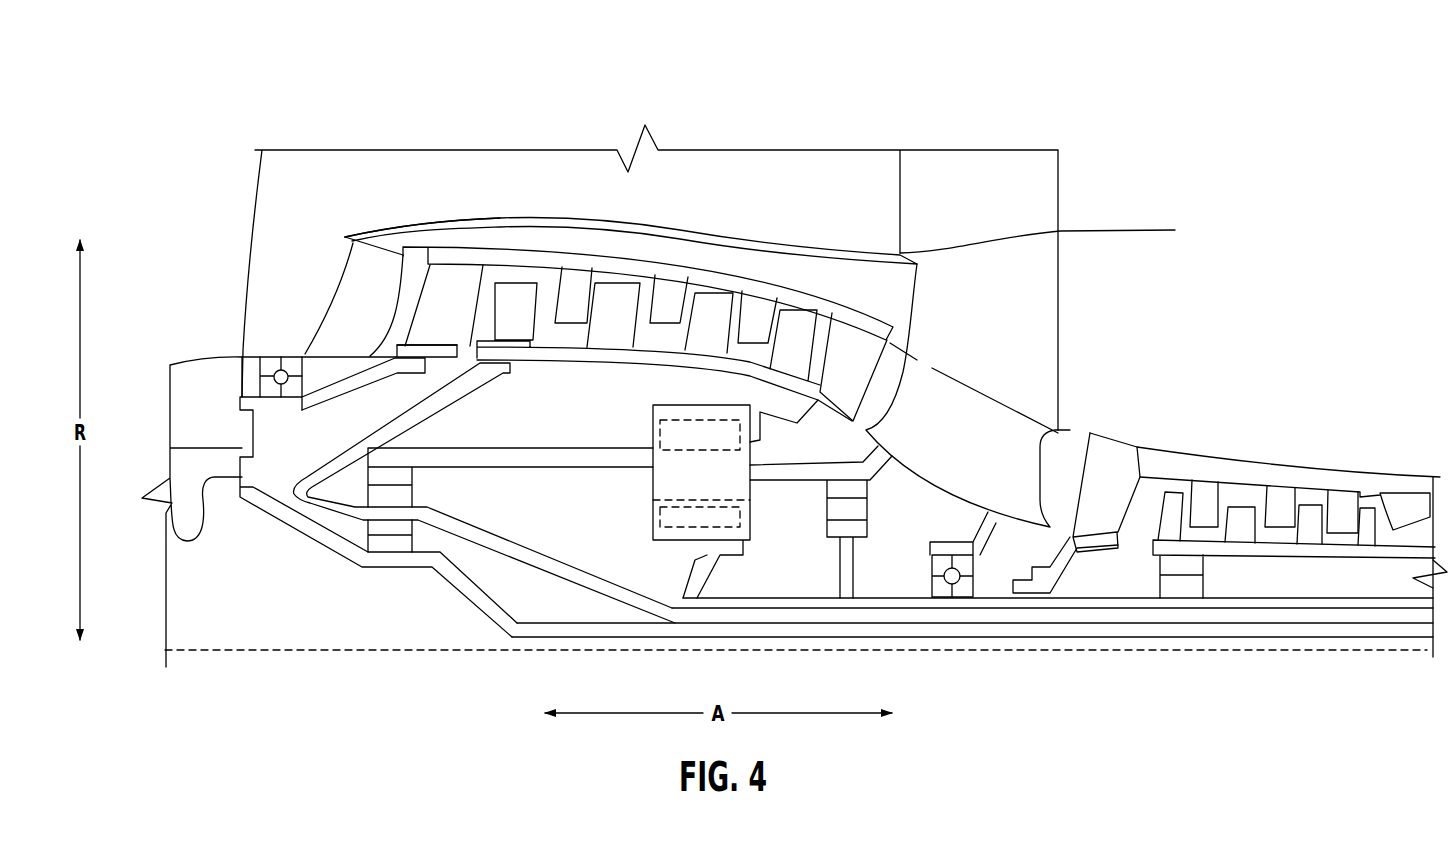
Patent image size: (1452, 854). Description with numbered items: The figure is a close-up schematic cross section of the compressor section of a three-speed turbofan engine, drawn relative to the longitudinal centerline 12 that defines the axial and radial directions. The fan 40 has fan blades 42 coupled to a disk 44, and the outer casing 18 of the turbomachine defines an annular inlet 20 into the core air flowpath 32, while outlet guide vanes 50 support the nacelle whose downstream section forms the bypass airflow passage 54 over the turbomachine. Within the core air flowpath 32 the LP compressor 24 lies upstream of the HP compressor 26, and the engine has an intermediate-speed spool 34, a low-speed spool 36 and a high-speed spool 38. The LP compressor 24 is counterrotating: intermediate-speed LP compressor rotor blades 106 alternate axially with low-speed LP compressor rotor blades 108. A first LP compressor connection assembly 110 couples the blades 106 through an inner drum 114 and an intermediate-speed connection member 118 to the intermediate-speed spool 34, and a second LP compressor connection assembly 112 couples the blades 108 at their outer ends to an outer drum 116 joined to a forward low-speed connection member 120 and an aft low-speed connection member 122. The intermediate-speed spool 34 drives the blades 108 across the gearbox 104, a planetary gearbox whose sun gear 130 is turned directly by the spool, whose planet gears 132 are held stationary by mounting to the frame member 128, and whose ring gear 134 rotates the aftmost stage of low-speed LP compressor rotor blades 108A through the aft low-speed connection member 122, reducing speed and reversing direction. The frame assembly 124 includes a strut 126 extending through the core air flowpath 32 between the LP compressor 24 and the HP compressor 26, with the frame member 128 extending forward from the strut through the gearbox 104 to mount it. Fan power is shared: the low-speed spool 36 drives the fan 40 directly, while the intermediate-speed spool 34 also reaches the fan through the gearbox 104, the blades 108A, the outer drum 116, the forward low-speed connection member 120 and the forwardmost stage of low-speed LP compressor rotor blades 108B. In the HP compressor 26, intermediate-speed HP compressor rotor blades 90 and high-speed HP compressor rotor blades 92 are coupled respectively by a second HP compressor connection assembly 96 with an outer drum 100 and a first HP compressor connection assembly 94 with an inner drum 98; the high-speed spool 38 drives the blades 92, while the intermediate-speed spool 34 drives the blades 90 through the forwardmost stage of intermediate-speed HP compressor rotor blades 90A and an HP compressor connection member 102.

The longitudinal centerline 12 is at (1232, 660).
The outer casing 18 is at (1127, 230).
The annular inlet 20 is at (315, 248).
The low pressure (LP) compressor 24 is at (527, 213).
The high pressure (HP) compressor 26 is at (1275, 430).
The core air flowpath 32 is at (1063, 407).
The intermediate-speed spool 34 is at (1090, 602).
The low-speed spool 36 is at (968, 632).
The high-speed spool 38 is at (1410, 553).
The fan 40 is at (135, 195).
The fan blades 42 is at (189, 237).
The disk 44 is at (180, 413).
The outlet guide vanes 50 is at (1058, 172).
The bypass airflow passage 54 is at (755, 177).
The intermediate-speed HP compressor rotor blades 90 is at (1203, 493).
The forwardmost stage of intermediate-speed HP compressor rotor blades 90A is at (1086, 502).
The high-speed HP compressor rotor blades 92 is at (1308, 513).
The first HP compressor connection assembly 94 is at (1303, 578).
The second HP compressor connection assembly 96 is at (1150, 397).
The inner drum 98 is at (1273, 548).
The outer drum 100 is at (1237, 473).
The HP compressor connection member 102 is at (1047, 573).
The gearbox 104 is at (650, 430).
The intermediate-speed LP compressor rotor blades 106 is at (618, 293).
The low-speed LP compressor rotor blades 108 is at (667, 293).
The aftmost stage of low-speed LP compressor rotor blades 108A is at (845, 358).
The forwardmost stage of low-speed LP compressor rotor blades 108B is at (437, 313).
The first LP compressor connection assembly 110 is at (500, 398).
The second LP compressor connection assembly 112 is at (487, 230).
The inner drum 114 is at (567, 360).
The outer drum 116 is at (577, 258).
The intermediate-speed connection member 118 is at (333, 450).
The forward low-speed connection member 120 is at (340, 383).
The aft low-speed connection member 122 is at (783, 428).
The frame assembly 124 is at (1070, 320).
The strut 126 is at (950, 433).
The frame member 128 is at (500, 467).
The sun gear 130 is at (677, 523).
The planet gear 132 is at (677, 477).
The ring gear 134 is at (693, 420).